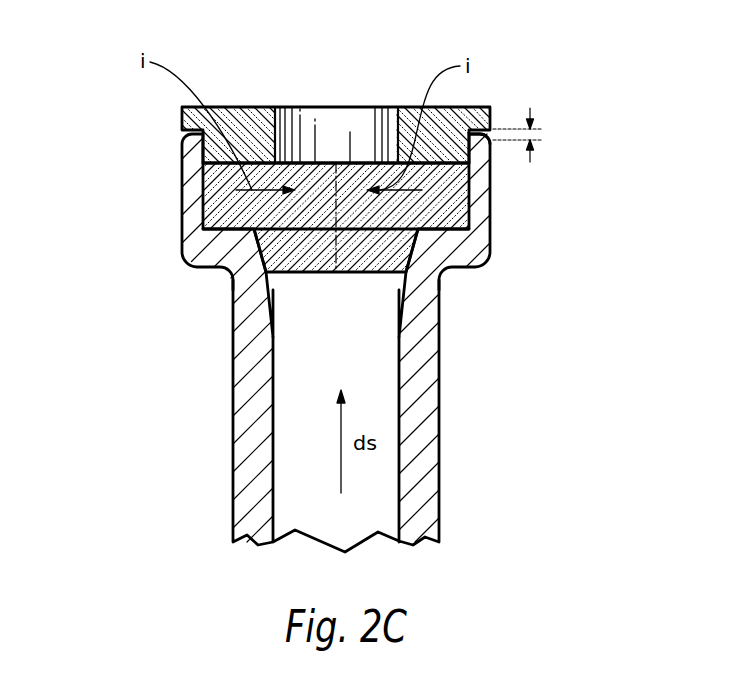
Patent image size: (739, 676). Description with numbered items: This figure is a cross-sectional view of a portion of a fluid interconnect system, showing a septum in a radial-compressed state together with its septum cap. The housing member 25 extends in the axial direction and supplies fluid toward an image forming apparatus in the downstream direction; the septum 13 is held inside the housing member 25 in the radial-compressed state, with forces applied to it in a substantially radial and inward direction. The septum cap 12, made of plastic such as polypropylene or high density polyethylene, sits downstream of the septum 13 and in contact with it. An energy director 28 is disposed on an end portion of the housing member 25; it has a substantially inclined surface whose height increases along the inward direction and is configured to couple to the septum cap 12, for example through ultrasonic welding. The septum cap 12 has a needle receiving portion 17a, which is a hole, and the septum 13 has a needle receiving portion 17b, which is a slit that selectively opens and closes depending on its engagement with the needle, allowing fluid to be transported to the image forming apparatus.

The septum cap 12 is at (168, 107).
The septum 13 is at (182, 223).
The needle receiving portion 17a is at (312, 117).
The needle receiving portion 17b is at (333, 216).
The housing member 25 is at (234, 450).
The energy director 28 is at (492, 137).